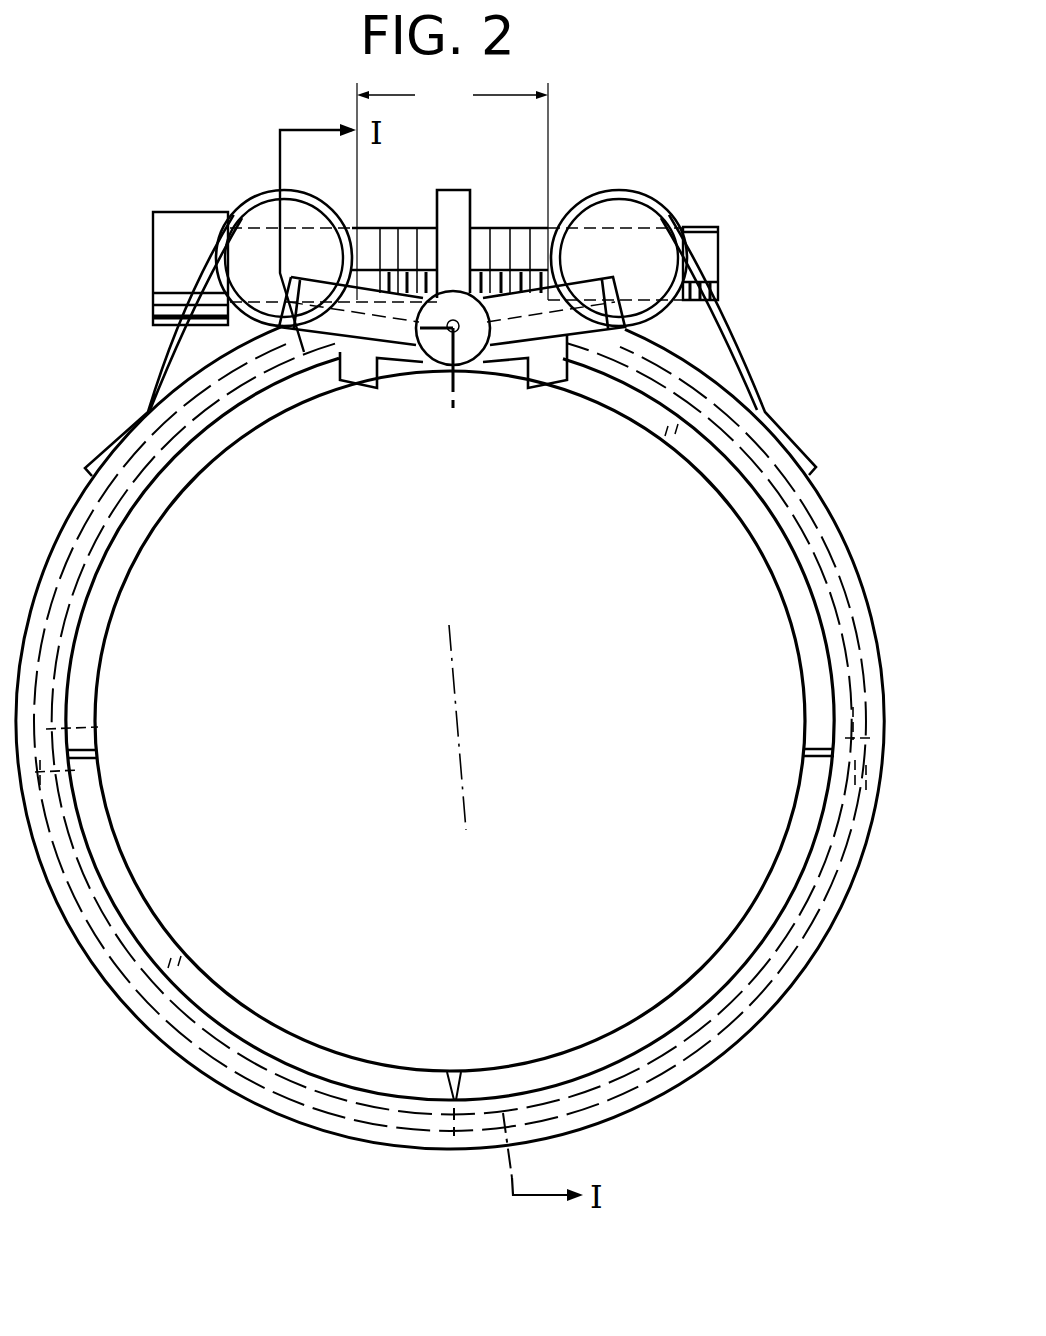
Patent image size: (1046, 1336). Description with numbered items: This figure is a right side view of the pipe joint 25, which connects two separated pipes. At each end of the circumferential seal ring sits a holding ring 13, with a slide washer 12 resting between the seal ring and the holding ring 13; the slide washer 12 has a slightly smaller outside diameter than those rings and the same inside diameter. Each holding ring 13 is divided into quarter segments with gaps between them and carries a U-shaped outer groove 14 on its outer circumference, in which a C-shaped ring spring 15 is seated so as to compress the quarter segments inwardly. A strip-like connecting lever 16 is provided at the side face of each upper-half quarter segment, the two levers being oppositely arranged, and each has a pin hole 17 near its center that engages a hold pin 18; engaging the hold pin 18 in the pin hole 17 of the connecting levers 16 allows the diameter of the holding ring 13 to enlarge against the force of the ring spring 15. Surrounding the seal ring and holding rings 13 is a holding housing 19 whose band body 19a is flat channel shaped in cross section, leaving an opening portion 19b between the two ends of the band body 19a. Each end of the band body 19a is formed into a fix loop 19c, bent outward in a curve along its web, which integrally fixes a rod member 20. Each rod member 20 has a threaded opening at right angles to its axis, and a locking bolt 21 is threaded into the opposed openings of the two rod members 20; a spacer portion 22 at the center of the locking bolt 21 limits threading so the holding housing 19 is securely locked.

The slide washer 12 is at (453, 372).
The holding ring 13 is at (155, 515).
The outer groove 14 is at (82, 730).
The ring spring 15 is at (92, 768).
The connecting lever 16 is at (322, 372).
The pin hole 17 is at (428, 360).
The hold pin 18 is at (462, 362).
The holding housing 19 is at (175, 1045).
The band body 19a is at (235, 1088).
The opening portion 19b is at (452, 187).
The fix loop 19c is at (612, 190).
The rod member 20 is at (262, 220).
The locking bolt 21 is at (158, 250).
The spacer portion 22 is at (447, 212).
The pipe joint 25 is at (523, 213).